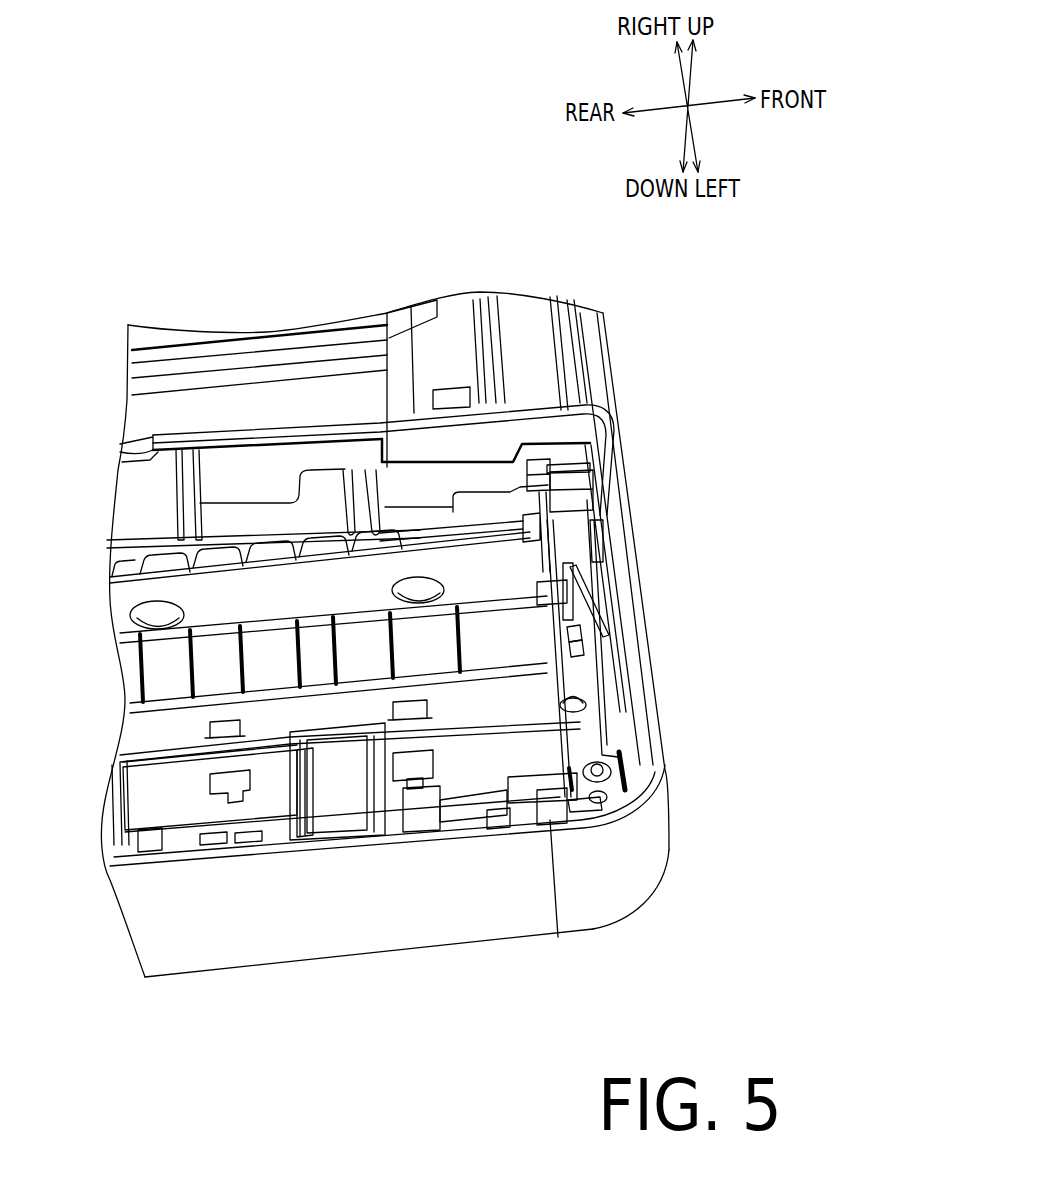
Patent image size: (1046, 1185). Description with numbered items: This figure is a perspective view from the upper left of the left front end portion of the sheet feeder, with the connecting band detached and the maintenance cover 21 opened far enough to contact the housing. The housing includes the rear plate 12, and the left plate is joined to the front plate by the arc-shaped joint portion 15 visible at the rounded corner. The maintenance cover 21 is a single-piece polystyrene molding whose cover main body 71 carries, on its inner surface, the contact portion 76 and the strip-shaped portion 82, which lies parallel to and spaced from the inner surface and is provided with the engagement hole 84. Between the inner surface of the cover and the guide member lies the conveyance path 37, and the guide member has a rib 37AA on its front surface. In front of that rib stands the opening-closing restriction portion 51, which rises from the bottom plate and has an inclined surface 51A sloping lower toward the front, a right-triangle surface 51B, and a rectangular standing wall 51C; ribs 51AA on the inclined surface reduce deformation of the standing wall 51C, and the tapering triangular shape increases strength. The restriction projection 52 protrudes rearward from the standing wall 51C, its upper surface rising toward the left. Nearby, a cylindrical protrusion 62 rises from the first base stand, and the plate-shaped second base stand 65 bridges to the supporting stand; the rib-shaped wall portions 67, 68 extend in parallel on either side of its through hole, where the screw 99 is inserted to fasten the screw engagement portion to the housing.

The rear plate 12 is at (483, 913).
The joint portion 15 is at (633, 877).
The maintenance cover 21 is at (590, 388).
The conveyance path 37 is at (193, 722).
The rib 37AA is at (555, 612).
The opening-closing restriction portion 51 is at (580, 637).
The inclined surface 51A is at (590, 597).
The ribs 51AA is at (580, 580).
The triangle surface 51B is at (587, 643).
The standing wall 51C is at (570, 653).
The restriction projection 52 is at (553, 595).
The protrusion 62 is at (603, 797).
The second base stand 65 is at (583, 727).
The wall portion 67 is at (623, 770).
The wall portion 68 is at (580, 805).
The cover main body 71 is at (410, 434).
The contact portion 76 is at (553, 530).
The strip-shaped portion 82 is at (580, 490).
The engagement hole 84 is at (579, 460).
The screw 99 is at (597, 763).